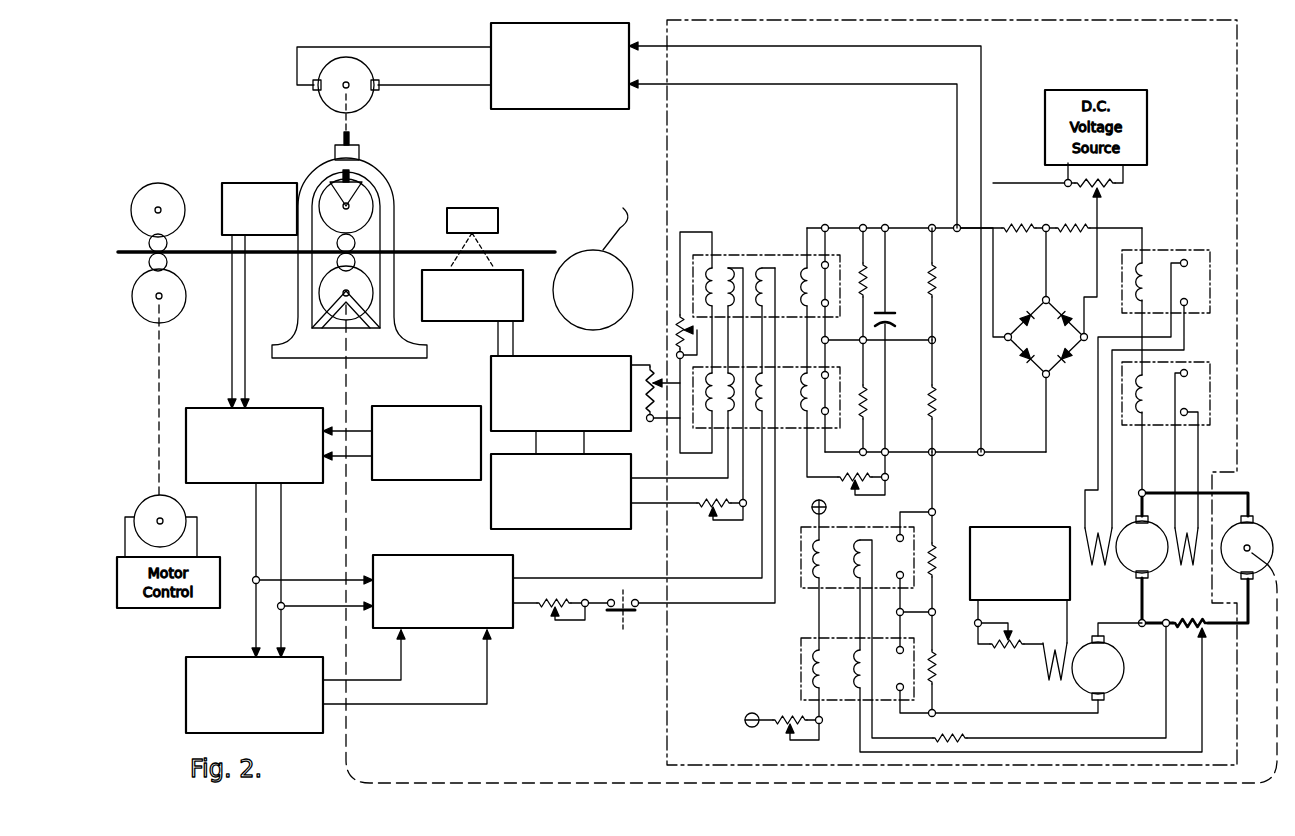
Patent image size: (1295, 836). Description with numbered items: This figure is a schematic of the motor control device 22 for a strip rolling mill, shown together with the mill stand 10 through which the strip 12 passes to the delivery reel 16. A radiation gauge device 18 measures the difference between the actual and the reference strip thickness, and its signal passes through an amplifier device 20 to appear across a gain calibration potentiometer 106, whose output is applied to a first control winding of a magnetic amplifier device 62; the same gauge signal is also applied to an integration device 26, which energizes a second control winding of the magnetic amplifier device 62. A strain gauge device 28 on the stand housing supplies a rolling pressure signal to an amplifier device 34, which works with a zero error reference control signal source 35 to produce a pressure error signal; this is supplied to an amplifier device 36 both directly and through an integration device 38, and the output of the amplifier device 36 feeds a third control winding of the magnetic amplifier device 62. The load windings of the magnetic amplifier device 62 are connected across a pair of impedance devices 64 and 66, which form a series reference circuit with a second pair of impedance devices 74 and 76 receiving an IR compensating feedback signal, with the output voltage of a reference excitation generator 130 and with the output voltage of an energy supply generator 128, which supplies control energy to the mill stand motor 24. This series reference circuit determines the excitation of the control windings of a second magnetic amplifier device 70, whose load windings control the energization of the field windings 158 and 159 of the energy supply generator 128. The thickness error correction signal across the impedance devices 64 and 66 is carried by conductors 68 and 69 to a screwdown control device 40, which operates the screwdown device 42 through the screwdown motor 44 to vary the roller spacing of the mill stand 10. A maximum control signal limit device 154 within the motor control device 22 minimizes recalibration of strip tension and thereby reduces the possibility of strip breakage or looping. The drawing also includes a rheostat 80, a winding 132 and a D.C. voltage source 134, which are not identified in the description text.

The mill stand 10 is at (428, 205).
The strip 12 is at (523, 249).
The delivery reel 16 is at (633, 272).
The radiation gauge device 18 is at (523, 277).
The amplifier device 20 is at (564, 356).
The motor control device 22 is at (667, 683).
The mill stand motor 24 is at (1240, 519).
The integration device 26 is at (611, 454).
The strain gauge device 28 is at (270, 183).
The amplifier device 34 is at (270, 408).
The zero error reference control signal source 35 is at (413, 406).
The amplifier device 36 is at (420, 555).
The integration device 38 is at (186, 677).
The screwdown control device 40 is at (491, 34).
The screwdown device 42 is at (335, 153).
The screwdown motor 44 is at (368, 69).
The magnetic amplifier device 62 is at (770, 244).
The impedance device 64 is at (937, 270).
The impedance device 66 is at (937, 393).
The conductor 68 is at (876, 84).
The conductor 69 is at (881, 46).
The magnetic amplifier device 70 is at (1180, 246).
The impedance device 74 is at (937, 662).
The impedance device 76 is at (936, 559).
The rheostat 80 is at (1190, 615).
The gain calibration potentiometer 106 is at (654, 368).
The energy supply generator 128 is at (1134, 522).
The reference excitation generator 130 is at (1118, 651).
The field winding 132 is at (1043, 667).
The D.C. voltage source 134 is at (1017, 527).
The maximum control signal limit device 154 is at (1034, 346).
The field winding 158 is at (1191, 571).
The field winding 159 is at (1109, 571).